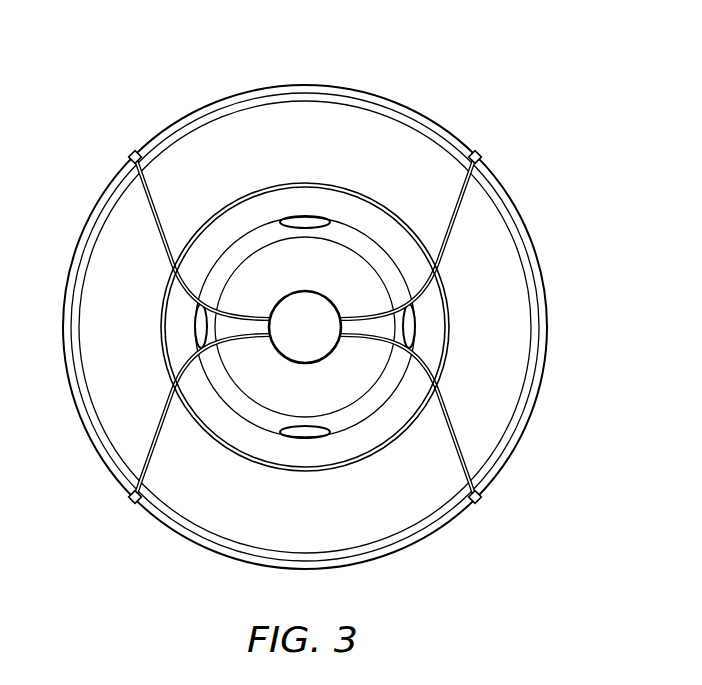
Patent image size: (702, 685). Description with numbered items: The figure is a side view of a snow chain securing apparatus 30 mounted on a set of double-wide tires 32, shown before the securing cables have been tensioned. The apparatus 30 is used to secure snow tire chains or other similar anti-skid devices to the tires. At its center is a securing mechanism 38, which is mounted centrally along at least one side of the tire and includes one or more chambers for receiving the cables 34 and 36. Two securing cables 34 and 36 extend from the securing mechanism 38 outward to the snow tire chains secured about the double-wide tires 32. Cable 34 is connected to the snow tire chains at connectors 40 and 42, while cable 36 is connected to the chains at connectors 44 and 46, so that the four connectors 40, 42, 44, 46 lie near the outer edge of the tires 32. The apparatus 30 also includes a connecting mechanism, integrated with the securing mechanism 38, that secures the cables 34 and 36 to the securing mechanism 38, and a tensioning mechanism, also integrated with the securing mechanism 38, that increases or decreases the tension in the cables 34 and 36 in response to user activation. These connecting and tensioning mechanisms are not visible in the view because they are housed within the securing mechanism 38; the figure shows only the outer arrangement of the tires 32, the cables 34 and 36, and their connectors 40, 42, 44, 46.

The snow chain securing apparatus 30 is at (484, 67).
The double-wide tires 32 is at (549, 332).
The securing cable 34 is at (448, 243).
The securing cable 36 is at (162, 408).
The securing mechanism 38 is at (310, 274).
The connector 40 is at (131, 155).
The connector 42 is at (479, 155).
The connector 44 is at (131, 500).
The connector 46 is at (479, 500).